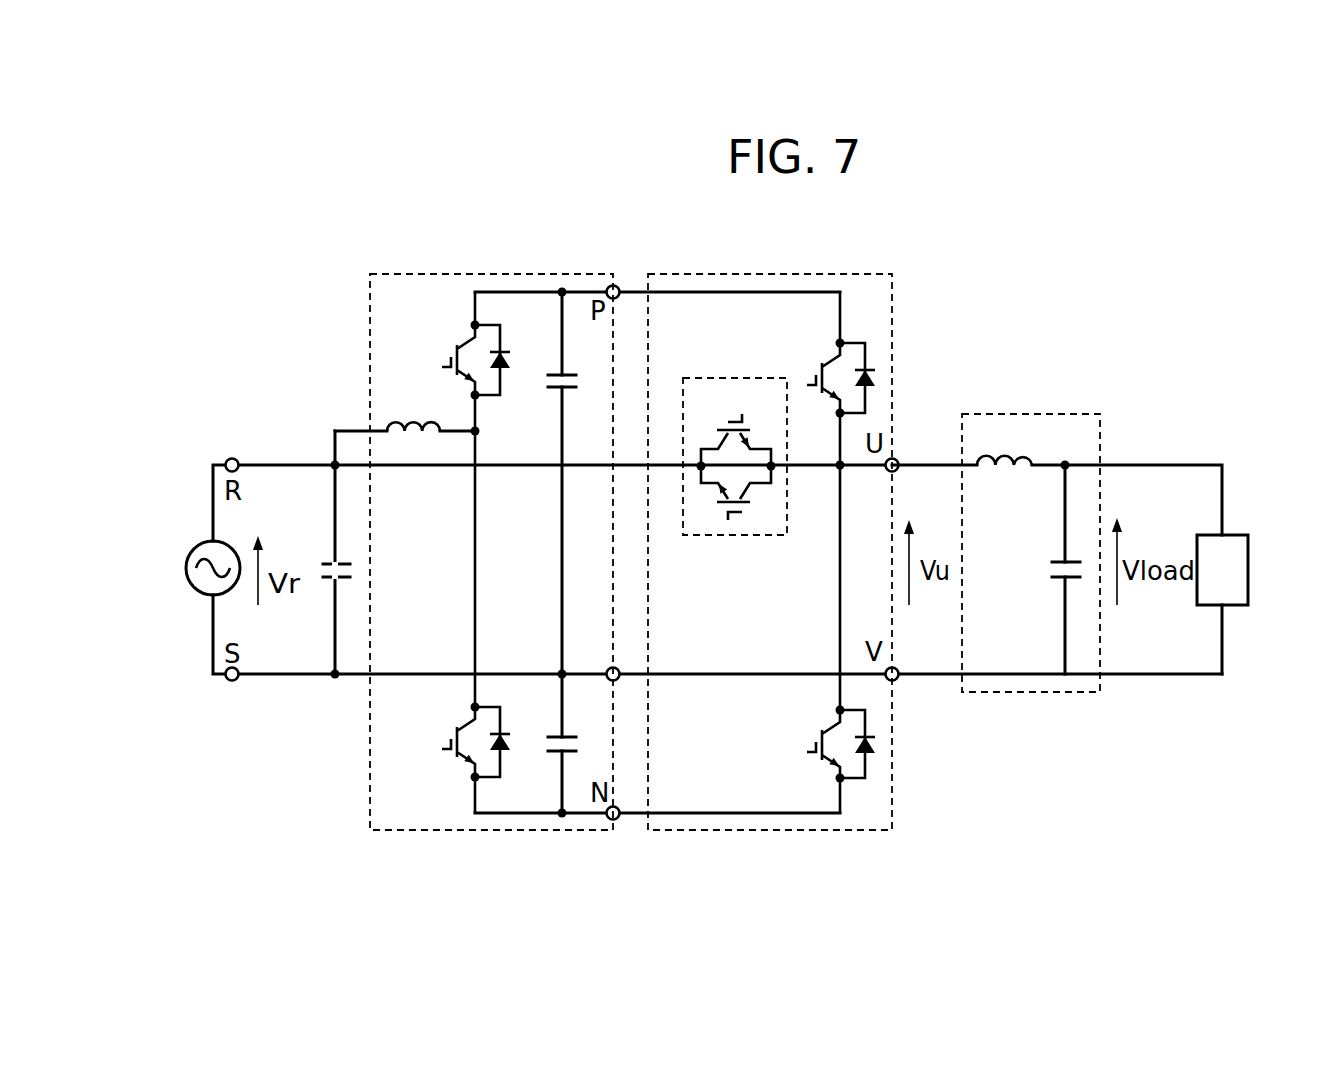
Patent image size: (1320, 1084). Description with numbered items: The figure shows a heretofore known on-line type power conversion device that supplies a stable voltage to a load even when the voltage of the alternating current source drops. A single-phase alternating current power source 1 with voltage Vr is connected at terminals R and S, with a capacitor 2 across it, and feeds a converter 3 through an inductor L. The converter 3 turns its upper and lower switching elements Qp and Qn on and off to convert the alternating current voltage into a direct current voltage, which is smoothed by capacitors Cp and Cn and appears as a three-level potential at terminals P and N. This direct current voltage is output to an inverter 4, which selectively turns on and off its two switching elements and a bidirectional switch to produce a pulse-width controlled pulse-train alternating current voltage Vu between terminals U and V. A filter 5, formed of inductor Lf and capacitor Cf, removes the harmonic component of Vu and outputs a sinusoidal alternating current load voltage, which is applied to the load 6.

The single-phase alternating current power source 1 is at (203, 541).
The capacitor 2 is at (333, 556).
The converter 3 is at (371, 362).
The inverter 4 is at (893, 373).
The filter 5 is at (1000, 414).
The load 6 is at (1240, 535).